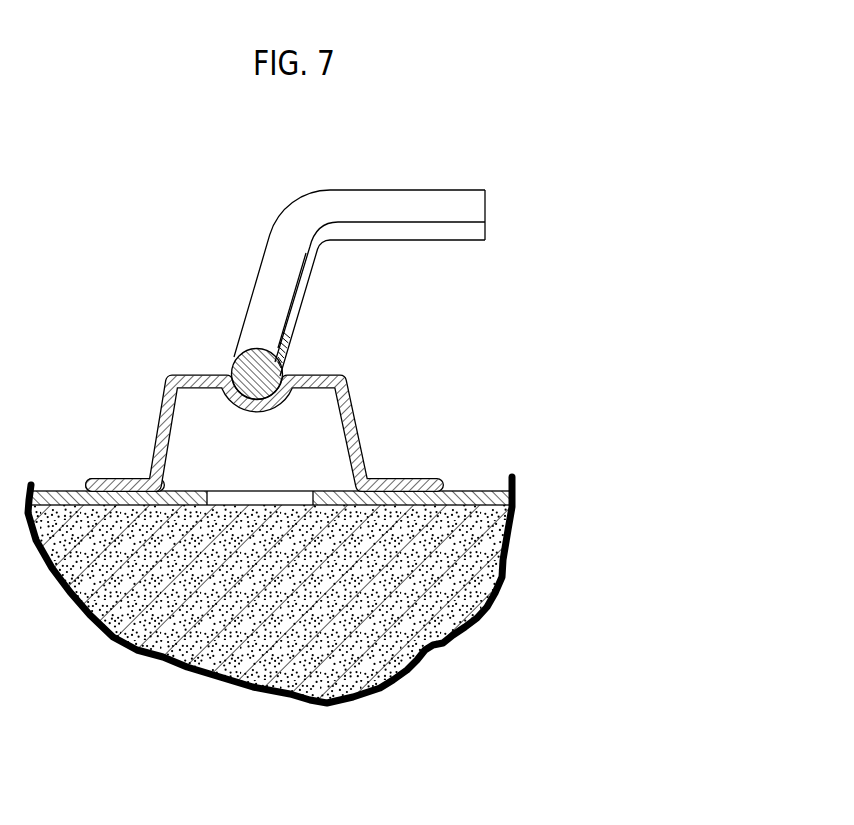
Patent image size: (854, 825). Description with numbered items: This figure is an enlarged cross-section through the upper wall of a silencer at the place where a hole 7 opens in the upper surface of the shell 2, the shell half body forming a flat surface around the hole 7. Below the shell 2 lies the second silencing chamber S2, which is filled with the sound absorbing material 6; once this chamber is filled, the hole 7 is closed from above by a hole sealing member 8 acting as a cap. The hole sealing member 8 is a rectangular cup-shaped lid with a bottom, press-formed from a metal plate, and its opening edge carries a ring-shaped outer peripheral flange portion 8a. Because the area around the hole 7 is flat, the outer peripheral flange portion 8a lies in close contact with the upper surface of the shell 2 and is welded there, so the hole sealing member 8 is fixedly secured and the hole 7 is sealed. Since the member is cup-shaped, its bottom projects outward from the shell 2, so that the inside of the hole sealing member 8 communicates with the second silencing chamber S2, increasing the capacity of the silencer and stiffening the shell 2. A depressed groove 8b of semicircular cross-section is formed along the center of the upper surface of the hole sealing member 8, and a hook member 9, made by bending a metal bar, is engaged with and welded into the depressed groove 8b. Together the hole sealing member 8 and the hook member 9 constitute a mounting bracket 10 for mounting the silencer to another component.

The shell 2 is at (298, 461).
The sound absorbing material 6 is at (405, 638).
The hole 7 is at (300, 490).
The hole sealing member 8 is at (275, 424).
The outer peripheral flange portion 8a is at (123, 479).
The depressed groove 8b is at (297, 332).
The hook member 9 is at (298, 208).
The mounting bracket 10 is at (288, 302).
The second silencing chamber S2 is at (282, 602).